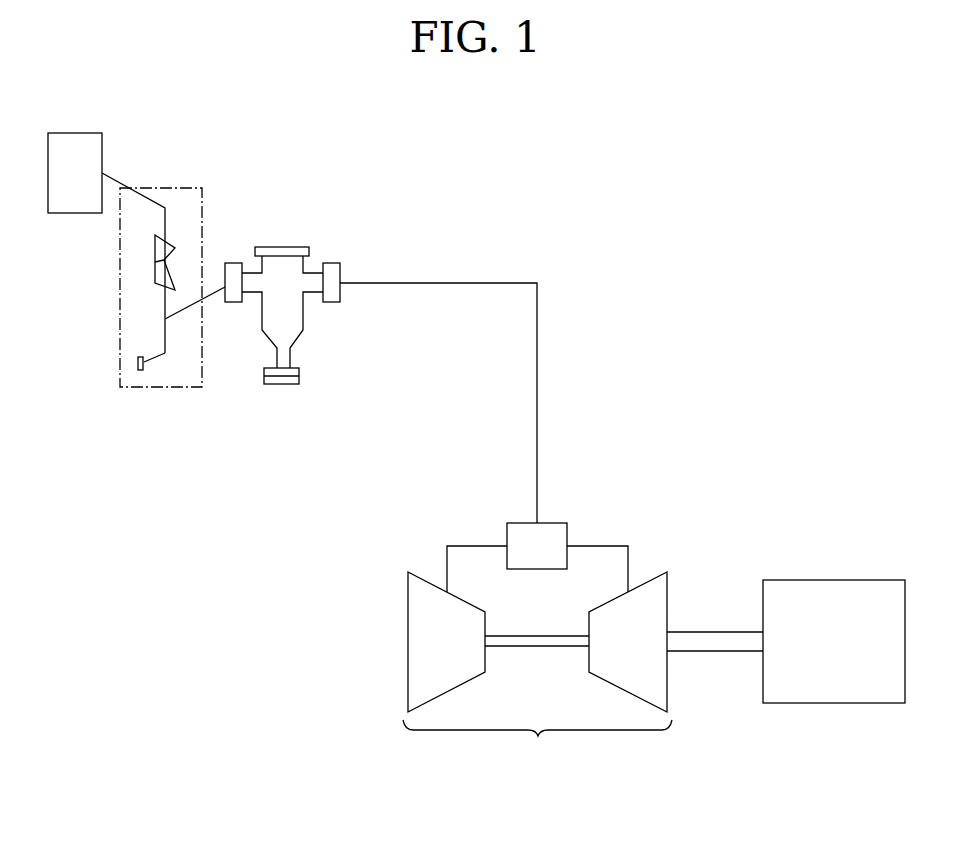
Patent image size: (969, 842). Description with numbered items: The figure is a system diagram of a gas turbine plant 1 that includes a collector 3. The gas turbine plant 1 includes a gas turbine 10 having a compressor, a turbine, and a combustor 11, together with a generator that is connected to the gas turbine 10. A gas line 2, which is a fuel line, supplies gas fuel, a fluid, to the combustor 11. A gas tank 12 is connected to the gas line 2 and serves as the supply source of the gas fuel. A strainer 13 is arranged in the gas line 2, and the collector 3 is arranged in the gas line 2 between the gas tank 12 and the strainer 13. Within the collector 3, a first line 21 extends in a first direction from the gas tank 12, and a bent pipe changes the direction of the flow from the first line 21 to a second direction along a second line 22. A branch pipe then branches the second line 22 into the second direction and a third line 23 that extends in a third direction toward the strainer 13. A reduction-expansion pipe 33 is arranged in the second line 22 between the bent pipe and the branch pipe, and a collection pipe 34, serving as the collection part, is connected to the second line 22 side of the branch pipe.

The gas turbine plant 1 is at (766, 214).
The gas line 2 is at (538, 320).
The collector 3 is at (215, 206).
The gas turbine 10 is at (537, 672).
The combustor 11 is at (560, 533).
The gas tank 12 is at (73, 142).
The strainer 13 is at (288, 319).
The first line 21 is at (160, 206).
The second line 22 is at (165, 333).
The third line 23 is at (212, 295).
The reduction-expansion pipe 33 is at (139, 256).
The collection pipe 34 is at (157, 358).